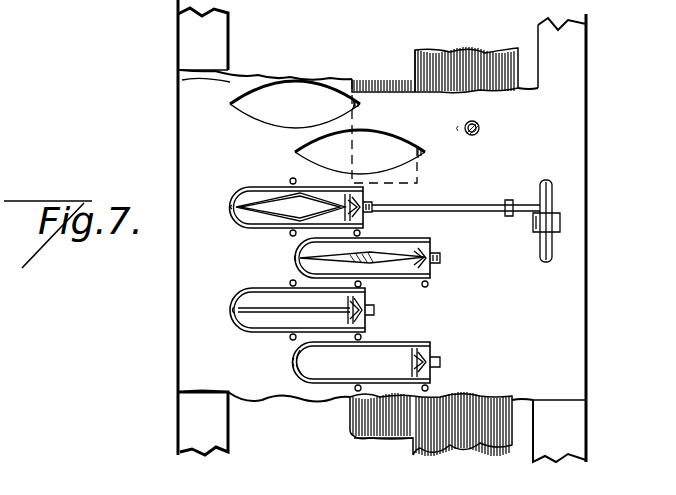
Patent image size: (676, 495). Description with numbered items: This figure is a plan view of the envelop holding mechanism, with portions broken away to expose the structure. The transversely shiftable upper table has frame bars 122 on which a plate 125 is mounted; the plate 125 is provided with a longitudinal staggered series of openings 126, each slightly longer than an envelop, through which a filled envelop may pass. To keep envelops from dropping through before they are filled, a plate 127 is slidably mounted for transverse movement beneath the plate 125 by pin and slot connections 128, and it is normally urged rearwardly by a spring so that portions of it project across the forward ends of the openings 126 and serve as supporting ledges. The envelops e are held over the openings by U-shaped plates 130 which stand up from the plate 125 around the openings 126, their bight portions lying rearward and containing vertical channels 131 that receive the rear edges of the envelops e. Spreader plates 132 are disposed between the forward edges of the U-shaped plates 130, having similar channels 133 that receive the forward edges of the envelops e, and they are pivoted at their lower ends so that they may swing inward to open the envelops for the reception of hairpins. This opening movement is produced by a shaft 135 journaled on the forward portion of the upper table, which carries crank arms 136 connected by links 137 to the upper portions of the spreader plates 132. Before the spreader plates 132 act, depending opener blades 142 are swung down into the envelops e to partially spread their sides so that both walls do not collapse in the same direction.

The frame bars 122 is at (212, 36).
The plate 125 is at (201, 87).
The openings 126 is at (283, 113).
The plate 127 is at (436, 63).
The pin and slot connections 128 is at (482, 128).
The U-shaped plates 130 is at (291, 253).
The vertical channels 131 is at (232, 208).
The spreader plates 132 is at (366, 312).
The channels 133 is at (430, 364).
The shaft 135 is at (540, 200).
The crank arms 136 is at (518, 222).
The links 137 is at (470, 194).
The opener blades 142 is at (366, 252).
The envelops e is at (254, 196).